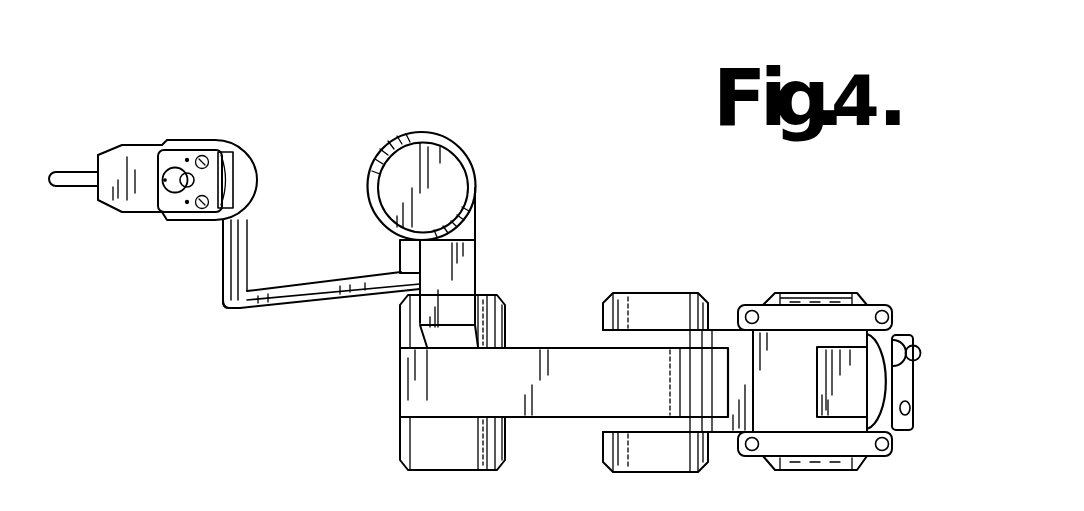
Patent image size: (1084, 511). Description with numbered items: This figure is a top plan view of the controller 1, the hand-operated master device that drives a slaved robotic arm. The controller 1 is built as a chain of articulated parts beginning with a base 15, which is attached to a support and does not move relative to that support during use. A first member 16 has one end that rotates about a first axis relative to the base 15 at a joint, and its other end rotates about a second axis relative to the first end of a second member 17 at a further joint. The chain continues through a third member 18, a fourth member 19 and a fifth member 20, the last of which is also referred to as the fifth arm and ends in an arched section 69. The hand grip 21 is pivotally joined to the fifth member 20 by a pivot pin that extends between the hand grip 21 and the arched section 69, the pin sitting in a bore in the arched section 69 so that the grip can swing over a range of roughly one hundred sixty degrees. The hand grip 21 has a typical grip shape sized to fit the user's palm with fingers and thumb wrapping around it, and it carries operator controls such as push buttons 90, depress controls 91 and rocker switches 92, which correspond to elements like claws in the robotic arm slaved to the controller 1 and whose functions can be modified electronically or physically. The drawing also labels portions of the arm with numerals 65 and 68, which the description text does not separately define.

The controller 1 is at (350, 411).
The base 15 is at (813, 293).
The first member 16 is at (897, 332).
The second member 17 is at (748, 335).
The third member 18 is at (541, 347).
The fourth member 19 is at (477, 259).
The fifth member 20 is at (300, 284).
The hand grip 21 is at (133, 146).
The arm lower edge 65 is at (338, 299).
The arm bend 68 is at (258, 307).
The arched section 69 is at (222, 246).
The push buttons 90 is at (185, 186).
The depress controls 91 is at (65, 171).
The rocker switches 92 is at (230, 153).